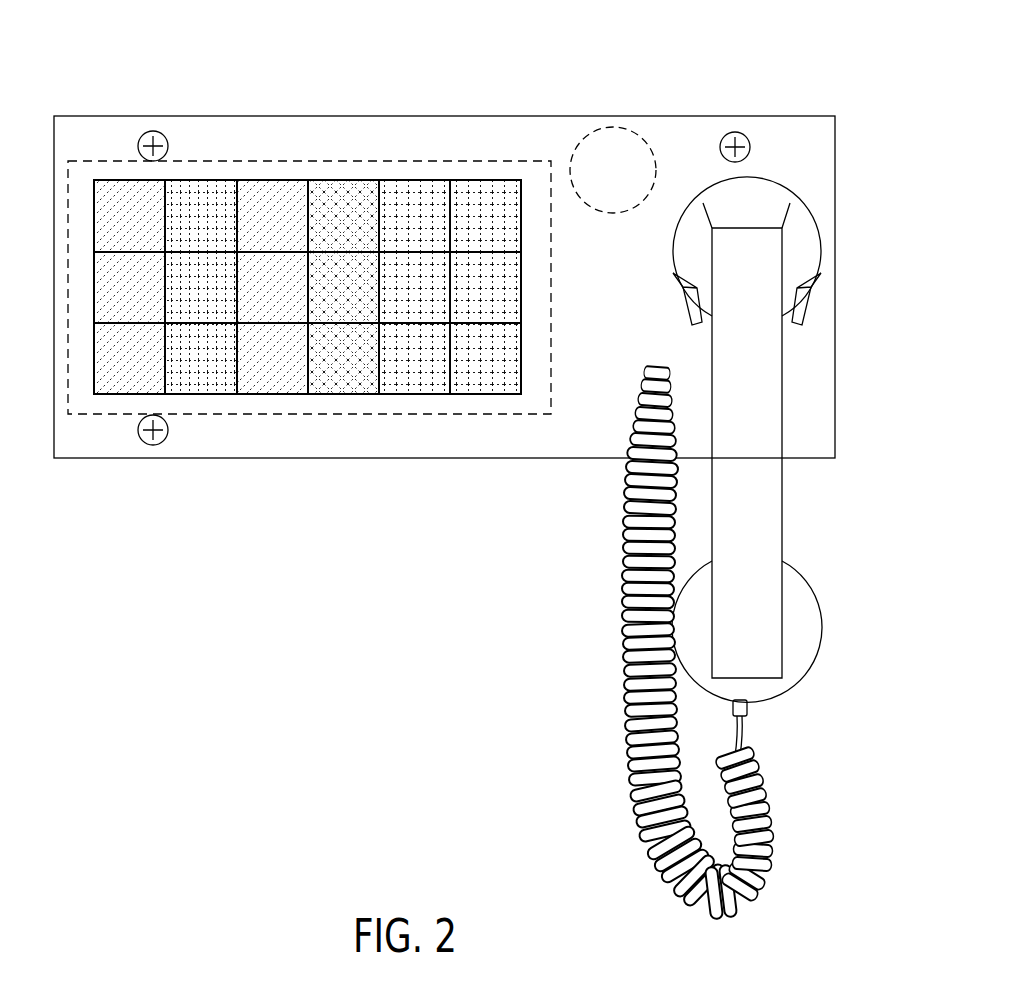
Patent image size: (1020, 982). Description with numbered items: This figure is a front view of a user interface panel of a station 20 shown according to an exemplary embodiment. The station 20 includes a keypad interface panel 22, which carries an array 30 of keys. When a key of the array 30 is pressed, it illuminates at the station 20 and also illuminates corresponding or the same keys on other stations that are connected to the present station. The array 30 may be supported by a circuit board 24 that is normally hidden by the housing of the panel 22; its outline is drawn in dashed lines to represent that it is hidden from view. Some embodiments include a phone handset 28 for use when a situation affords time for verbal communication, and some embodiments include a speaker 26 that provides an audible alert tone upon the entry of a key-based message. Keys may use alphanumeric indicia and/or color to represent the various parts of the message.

The station 20 is at (750, 50).
The keypad interface panel 22 is at (836, 185).
The circuit board 24 is at (343, 160).
The speaker 26 is at (588, 135).
The phone handset 28 is at (782, 505).
The array of keys 30 is at (327, 436).